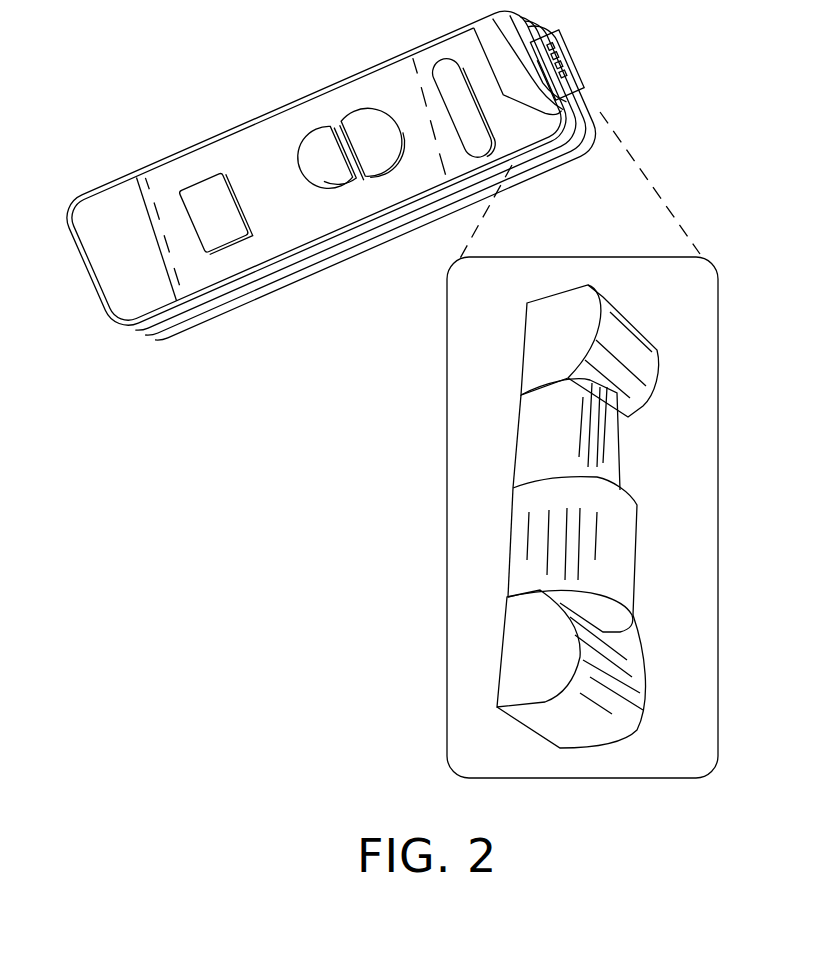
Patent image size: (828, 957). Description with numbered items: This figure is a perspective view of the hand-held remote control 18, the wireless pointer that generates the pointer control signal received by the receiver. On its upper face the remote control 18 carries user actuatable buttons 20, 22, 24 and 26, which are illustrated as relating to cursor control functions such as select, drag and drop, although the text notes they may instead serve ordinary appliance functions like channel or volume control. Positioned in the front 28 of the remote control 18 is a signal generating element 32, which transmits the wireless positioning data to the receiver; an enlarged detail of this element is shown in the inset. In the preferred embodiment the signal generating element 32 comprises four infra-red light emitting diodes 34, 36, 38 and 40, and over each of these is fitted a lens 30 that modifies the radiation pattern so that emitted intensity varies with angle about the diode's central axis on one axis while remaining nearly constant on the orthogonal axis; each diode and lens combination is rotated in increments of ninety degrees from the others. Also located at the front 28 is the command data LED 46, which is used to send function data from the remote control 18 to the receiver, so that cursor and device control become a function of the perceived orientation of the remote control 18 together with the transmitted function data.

The remote control 18 is at (270, 130).
The user actuatable button 20 is at (484, 150).
The user actuatable button 22 is at (390, 170).
The user actuatable button 24 is at (347, 180).
The user actuatable button 26 is at (233, 246).
The front 28 is at (603, 129).
The lens 30 is at (589, 516).
The signal generating element 32 is at (574, 78).
The infra-red light emitting diode 34 is at (565, 341).
The infra-red light emitting diode 36 is at (555, 438).
The infra-red light emitting diode 38 is at (598, 615).
The infra-red light emitting diode 40 is at (543, 657).
The command data LED 46 is at (580, 101).